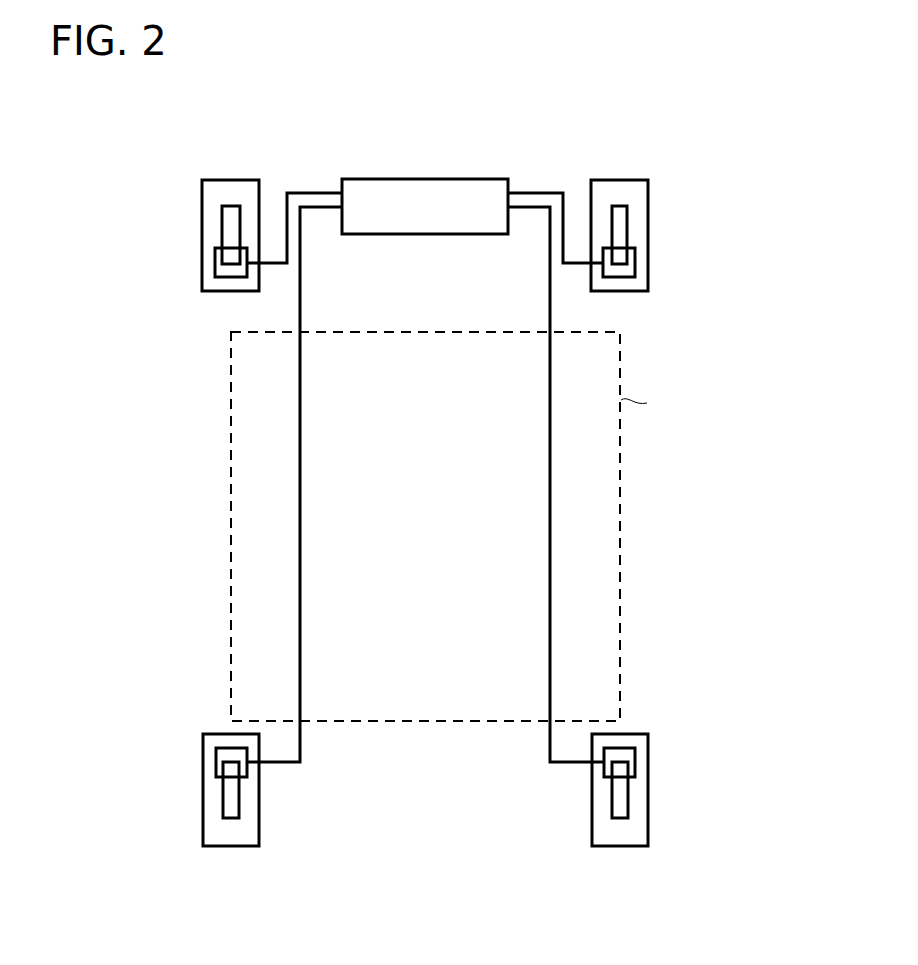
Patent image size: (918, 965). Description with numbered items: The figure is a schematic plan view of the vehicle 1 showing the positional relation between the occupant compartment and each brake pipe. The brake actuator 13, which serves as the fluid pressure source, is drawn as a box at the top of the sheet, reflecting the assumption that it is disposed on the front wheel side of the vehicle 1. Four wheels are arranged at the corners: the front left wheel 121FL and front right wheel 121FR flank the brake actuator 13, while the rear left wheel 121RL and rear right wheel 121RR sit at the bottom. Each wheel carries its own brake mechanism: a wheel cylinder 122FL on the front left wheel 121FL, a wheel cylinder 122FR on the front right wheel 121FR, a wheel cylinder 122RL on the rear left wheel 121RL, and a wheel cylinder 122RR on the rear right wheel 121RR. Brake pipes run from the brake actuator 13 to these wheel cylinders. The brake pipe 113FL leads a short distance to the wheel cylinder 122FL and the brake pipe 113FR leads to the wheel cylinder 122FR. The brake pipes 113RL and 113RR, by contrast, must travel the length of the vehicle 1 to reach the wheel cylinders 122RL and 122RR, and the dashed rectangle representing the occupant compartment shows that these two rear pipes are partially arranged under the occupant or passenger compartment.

The vehicle 1 is at (447, 449).
The brake actuator 13 is at (398, 178).
The brake pipe 113FL is at (316, 190).
The brake pipe 113FR is at (535, 190).
The brake pipe 113RL is at (298, 303).
The brake pipe 113RR is at (552, 303).
The front left wheel 121FL is at (201, 195).
The front right wheel 121FR is at (649, 182).
The rear left wheel 121RL is at (202, 835).
The rear right wheel 121RR is at (649, 822).
The wheel cylinder 122FL is at (214, 268).
The wheel cylinder 122FR is at (636, 256).
The wheel cylinder 122RL is at (215, 760).
The wheel cylinder 122RR is at (636, 750).